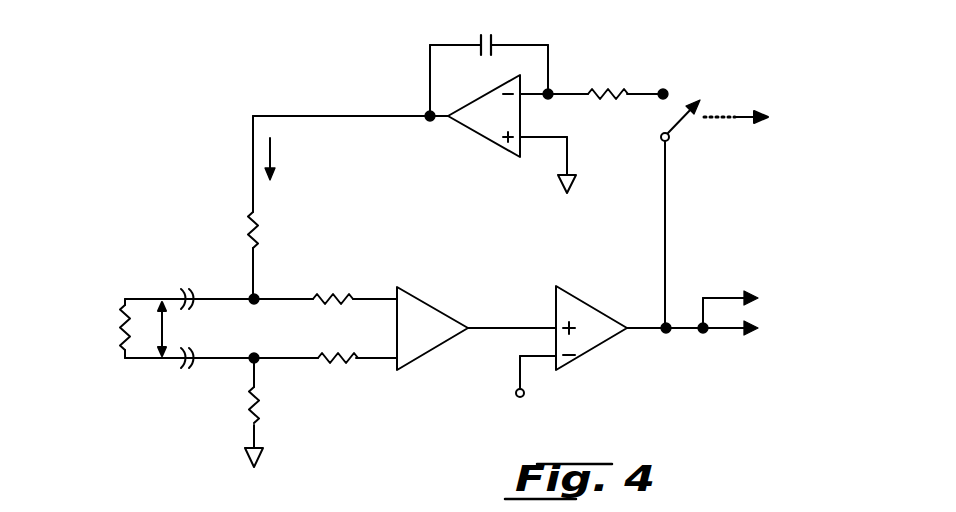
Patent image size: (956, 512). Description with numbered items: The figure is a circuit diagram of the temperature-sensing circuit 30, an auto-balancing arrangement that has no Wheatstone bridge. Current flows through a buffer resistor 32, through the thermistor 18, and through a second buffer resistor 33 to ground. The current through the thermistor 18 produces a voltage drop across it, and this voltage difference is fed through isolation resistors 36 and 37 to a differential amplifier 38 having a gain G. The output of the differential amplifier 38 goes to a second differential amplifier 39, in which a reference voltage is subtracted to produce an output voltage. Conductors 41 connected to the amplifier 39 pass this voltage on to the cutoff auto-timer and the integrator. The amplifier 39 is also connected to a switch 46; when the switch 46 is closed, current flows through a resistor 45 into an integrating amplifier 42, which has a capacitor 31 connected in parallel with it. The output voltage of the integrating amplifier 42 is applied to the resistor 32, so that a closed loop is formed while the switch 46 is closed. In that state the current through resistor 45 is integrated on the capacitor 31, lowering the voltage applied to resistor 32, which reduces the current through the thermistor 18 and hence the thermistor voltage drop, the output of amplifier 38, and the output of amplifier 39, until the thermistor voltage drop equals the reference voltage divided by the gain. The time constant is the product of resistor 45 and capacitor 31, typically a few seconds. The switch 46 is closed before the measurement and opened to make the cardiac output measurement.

The thermistor 18 is at (122, 302).
The temperature-sensing circuit 30 is at (449, 255).
The capacitor 31 is at (494, 44).
The buffer resistor 32 is at (248, 236).
The second buffer resistor 33 is at (247, 416).
The isolation resistor 36 is at (324, 306).
The isolation resistor 37 is at (325, 352).
The differential amplifier 38 is at (432, 327).
The second differential amplifier 39 is at (591, 328).
The conductors 41 is at (742, 313).
The integrating amplifier 42 is at (484, 116).
The resistor 45 is at (619, 83).
The switch 46 is at (676, 132).